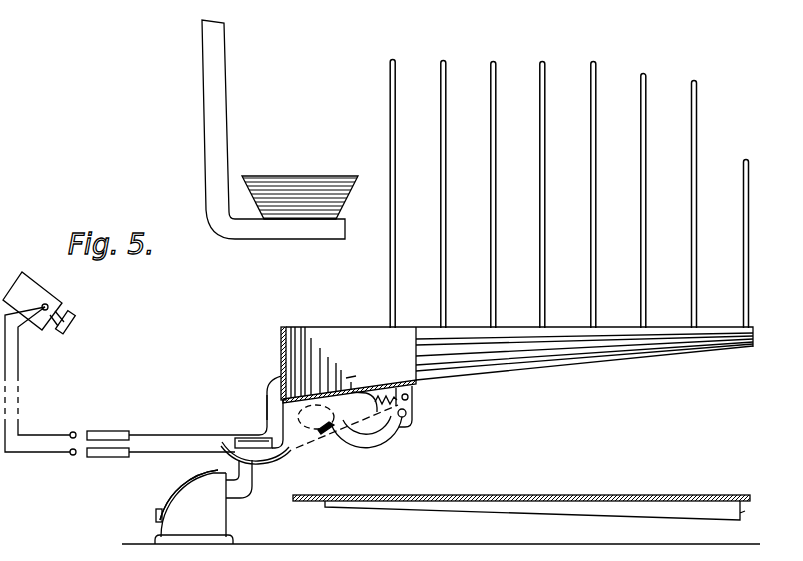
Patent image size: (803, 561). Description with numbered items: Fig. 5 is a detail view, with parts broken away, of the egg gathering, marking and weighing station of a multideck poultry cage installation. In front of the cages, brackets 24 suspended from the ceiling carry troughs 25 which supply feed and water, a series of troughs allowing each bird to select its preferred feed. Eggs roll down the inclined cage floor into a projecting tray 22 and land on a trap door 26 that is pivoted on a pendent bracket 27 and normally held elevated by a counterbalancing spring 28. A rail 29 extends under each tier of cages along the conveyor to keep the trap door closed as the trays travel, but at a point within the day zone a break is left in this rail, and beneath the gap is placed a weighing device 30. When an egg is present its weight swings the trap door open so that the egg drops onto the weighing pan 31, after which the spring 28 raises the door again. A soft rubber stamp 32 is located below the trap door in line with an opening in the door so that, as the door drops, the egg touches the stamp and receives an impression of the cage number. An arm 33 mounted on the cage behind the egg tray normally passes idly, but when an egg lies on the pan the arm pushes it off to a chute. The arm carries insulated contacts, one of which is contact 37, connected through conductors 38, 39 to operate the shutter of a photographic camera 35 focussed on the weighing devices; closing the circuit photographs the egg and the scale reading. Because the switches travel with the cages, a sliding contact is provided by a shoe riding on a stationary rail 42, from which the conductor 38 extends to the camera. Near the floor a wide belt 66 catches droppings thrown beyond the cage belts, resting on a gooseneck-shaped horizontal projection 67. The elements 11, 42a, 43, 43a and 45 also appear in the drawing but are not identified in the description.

The rods 11 is at (395, 277).
The projecting tray 22 is at (313, 338).
The bracket 24 is at (223, 100).
The trough 25 is at (357, 177).
The trap door 26 is at (337, 373).
The pendent bracket 27 is at (402, 435).
The counterbalancing spring 28 is at (412, 408).
The rail 29 is at (269, 405).
The weighing device 30 is at (225, 513).
The weighing pan 31 is at (262, 462).
The soft rubber stamp 32 is at (326, 434).
The arm 33 is at (273, 392).
The photographic camera 35 is at (38, 289).
The contact 37 is at (243, 438).
The conductor 38 is at (45, 433).
The conductor 39 is at (40, 453).
The stationary rail 42 is at (77, 430).
The terminal 42a is at (73, 457).
The resistor 43 is at (115, 430).
The resistor 43a is at (115, 458).
The cover 45 is at (178, 486).
The wide belt 66 is at (518, 497).
The gooseneck-shaped horizontal projection 67 is at (553, 510).